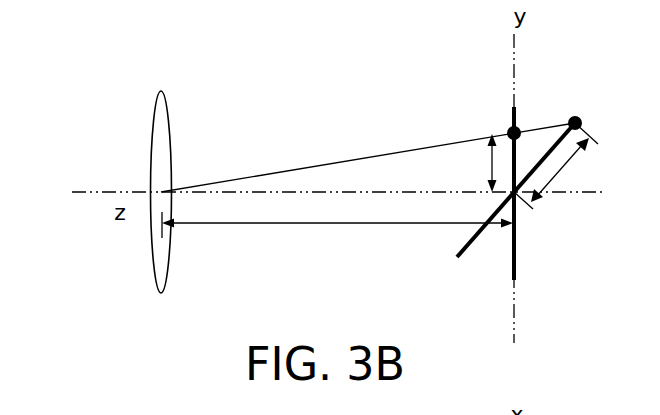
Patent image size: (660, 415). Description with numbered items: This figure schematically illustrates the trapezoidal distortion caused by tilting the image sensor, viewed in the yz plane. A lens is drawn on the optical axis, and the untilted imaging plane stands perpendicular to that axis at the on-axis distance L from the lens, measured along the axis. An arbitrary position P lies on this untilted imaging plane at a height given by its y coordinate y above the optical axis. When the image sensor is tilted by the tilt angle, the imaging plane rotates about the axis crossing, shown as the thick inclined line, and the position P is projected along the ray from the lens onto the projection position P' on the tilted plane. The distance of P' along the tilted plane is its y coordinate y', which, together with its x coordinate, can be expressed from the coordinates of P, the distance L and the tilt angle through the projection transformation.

The position P is at (463, 113).
The projection position P' is at (596, 104).
The on-axis distance L is at (337, 234).
The y coordinate y is at (480, 163).
The y coordinate of projection position y' is at (556, 166).